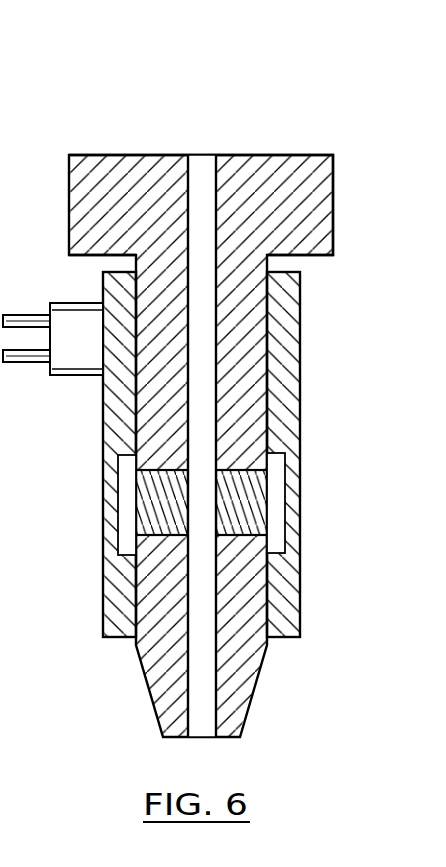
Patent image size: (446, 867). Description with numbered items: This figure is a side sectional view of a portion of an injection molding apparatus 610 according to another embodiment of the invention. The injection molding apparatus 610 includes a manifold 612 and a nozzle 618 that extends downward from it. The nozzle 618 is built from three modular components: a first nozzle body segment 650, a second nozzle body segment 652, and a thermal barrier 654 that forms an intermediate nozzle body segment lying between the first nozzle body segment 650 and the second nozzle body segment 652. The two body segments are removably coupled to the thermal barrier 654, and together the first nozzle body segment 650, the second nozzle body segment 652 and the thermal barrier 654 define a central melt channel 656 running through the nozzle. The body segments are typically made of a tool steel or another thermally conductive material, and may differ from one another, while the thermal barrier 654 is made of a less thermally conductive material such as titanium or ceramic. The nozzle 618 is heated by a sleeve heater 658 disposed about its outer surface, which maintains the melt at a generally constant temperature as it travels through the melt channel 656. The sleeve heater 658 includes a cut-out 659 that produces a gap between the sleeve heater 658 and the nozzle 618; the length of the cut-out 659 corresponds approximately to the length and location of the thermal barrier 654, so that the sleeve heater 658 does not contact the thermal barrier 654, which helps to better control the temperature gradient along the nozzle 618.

The injection molding apparatus 610 is at (275, 115).
The manifold 612 is at (315, 182).
The nozzle 618 is at (161, 412).
The first nozzle body segment 650 is at (240, 332).
The second nozzle body segment 652 is at (247, 572).
The thermal barrier 654 is at (155, 520).
The melt channel 656 is at (203, 614).
The sleeve heater 658 is at (115, 385).
The cut-out 659 is at (127, 500).